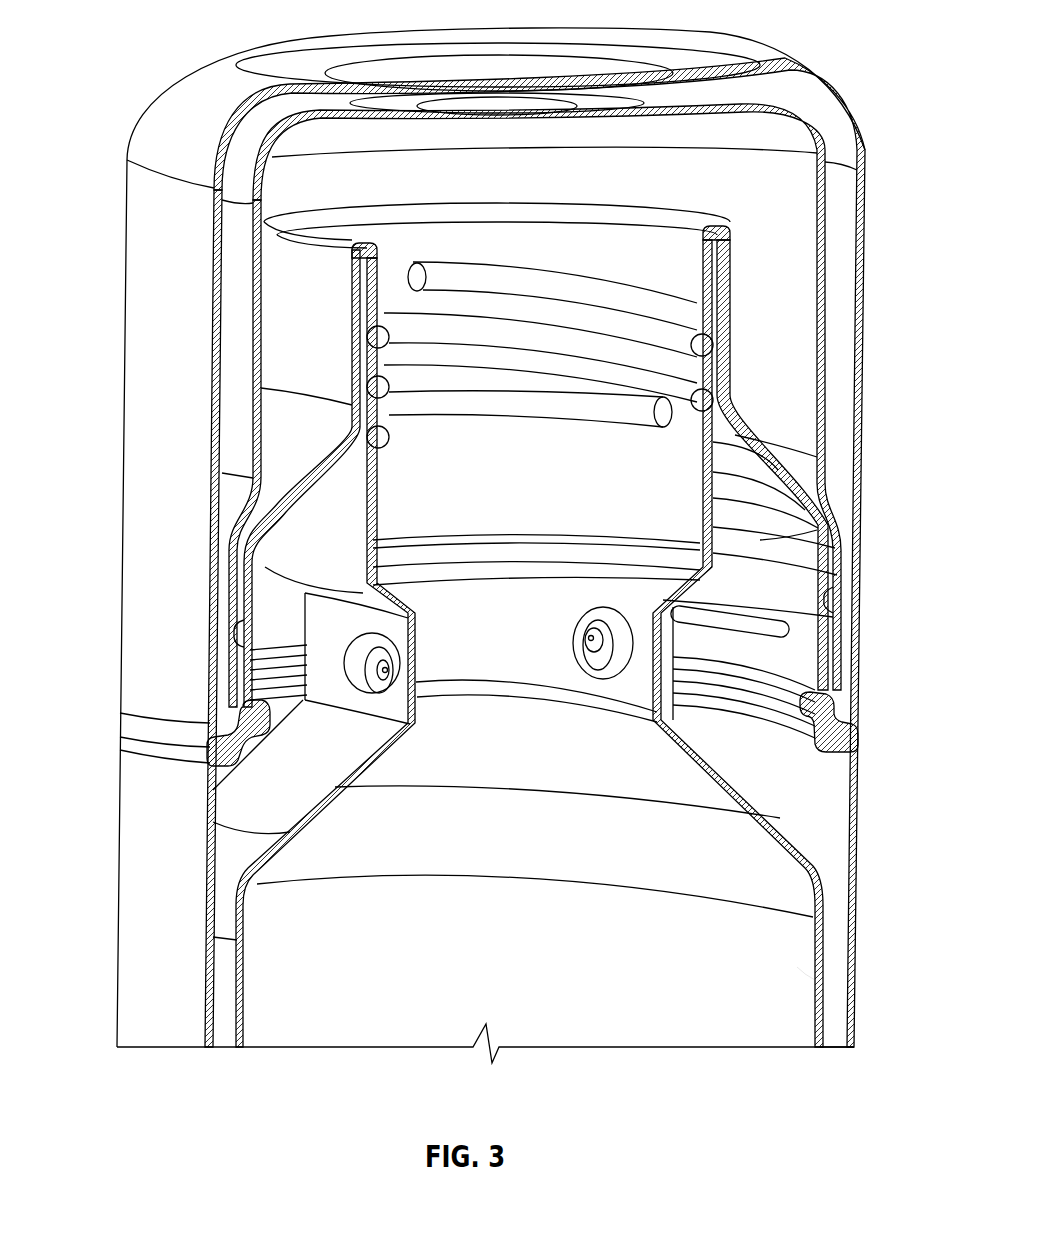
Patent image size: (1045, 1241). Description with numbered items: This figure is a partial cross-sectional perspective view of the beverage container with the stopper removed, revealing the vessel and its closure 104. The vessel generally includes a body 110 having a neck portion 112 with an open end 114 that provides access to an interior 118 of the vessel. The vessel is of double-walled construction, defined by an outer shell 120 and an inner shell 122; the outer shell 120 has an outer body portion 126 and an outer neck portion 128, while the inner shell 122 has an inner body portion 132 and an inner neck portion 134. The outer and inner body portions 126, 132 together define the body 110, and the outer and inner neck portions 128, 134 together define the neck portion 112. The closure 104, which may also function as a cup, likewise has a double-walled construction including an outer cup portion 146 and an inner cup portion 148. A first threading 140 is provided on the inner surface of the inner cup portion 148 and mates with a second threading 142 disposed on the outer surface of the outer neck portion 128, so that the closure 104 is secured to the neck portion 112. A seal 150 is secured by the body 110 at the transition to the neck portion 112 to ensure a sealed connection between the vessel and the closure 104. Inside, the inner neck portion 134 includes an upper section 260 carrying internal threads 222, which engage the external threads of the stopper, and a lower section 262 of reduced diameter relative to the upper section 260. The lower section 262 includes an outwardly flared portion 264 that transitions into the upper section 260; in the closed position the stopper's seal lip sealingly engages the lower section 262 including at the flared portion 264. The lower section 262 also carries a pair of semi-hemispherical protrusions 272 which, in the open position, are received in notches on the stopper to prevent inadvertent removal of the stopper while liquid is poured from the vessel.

The closure 104 is at (126, 289).
The body 110 is at (858, 867).
The neck portion 112 is at (740, 417).
The open end 114 is at (667, 224).
The interior 118 is at (797, 967).
The outer shell 120 is at (157, 845).
The inner shell 122 is at (210, 1023).
The outer body portion 126 is at (853, 1029).
The outer neck portion 128 is at (778, 458).
The inner body portion 132 is at (817, 1003).
The inner neck portion 134 is at (833, 541).
The first threading 140 is at (830, 598).
The second threading 142 is at (230, 628).
The outer cup portion 146 is at (863, 242).
The inner cup portion 148 is at (823, 293).
The seal 150 is at (858, 735).
The internal threads 222 is at (603, 405).
The upper section 260 is at (588, 262).
The lower section 262 is at (510, 668).
The outwardly flared portion 264 is at (500, 553).
The protrusion 272 is at (372, 687).